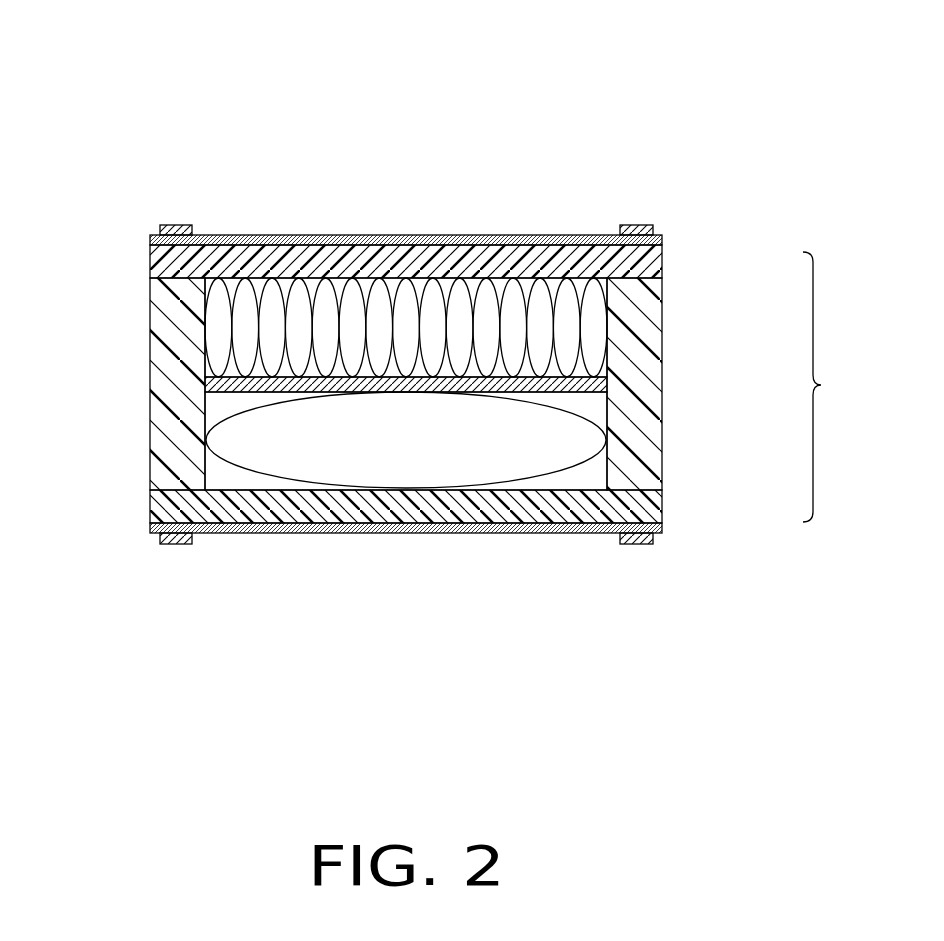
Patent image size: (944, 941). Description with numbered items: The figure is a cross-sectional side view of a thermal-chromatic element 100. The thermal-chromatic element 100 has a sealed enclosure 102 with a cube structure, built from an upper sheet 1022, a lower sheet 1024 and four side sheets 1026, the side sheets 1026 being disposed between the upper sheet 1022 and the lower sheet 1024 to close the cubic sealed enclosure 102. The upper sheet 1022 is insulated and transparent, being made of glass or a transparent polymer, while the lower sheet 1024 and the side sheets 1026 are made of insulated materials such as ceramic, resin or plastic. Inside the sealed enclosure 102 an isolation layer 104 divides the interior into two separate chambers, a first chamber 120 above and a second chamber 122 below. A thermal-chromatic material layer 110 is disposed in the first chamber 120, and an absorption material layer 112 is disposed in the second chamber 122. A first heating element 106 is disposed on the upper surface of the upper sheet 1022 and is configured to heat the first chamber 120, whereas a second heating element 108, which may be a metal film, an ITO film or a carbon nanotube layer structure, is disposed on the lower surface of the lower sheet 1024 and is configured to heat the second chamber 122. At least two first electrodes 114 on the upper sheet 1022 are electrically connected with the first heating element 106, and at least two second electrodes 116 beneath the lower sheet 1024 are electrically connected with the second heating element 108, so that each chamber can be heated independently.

The thermal-chromatic element 100 is at (435, 88).
The sealed enclosure 102 is at (842, 387).
The upper sheet 1022 is at (663, 262).
The lower sheet 1024 is at (650, 506).
The side sheets 1026 is at (635, 347).
The isolation layer 104 is at (203, 377).
The first heating element 106 is at (513, 235).
The second heating element 108 is at (495, 533).
The thermal-chromatic material layer 110 is at (322, 300).
The absorption material layer 112 is at (377, 467).
The first electrodes 114 is at (173, 225).
The second electrodes 116 is at (157, 543).
The first chamber 120 is at (231, 305).
The second chamber 122 is at (222, 472).